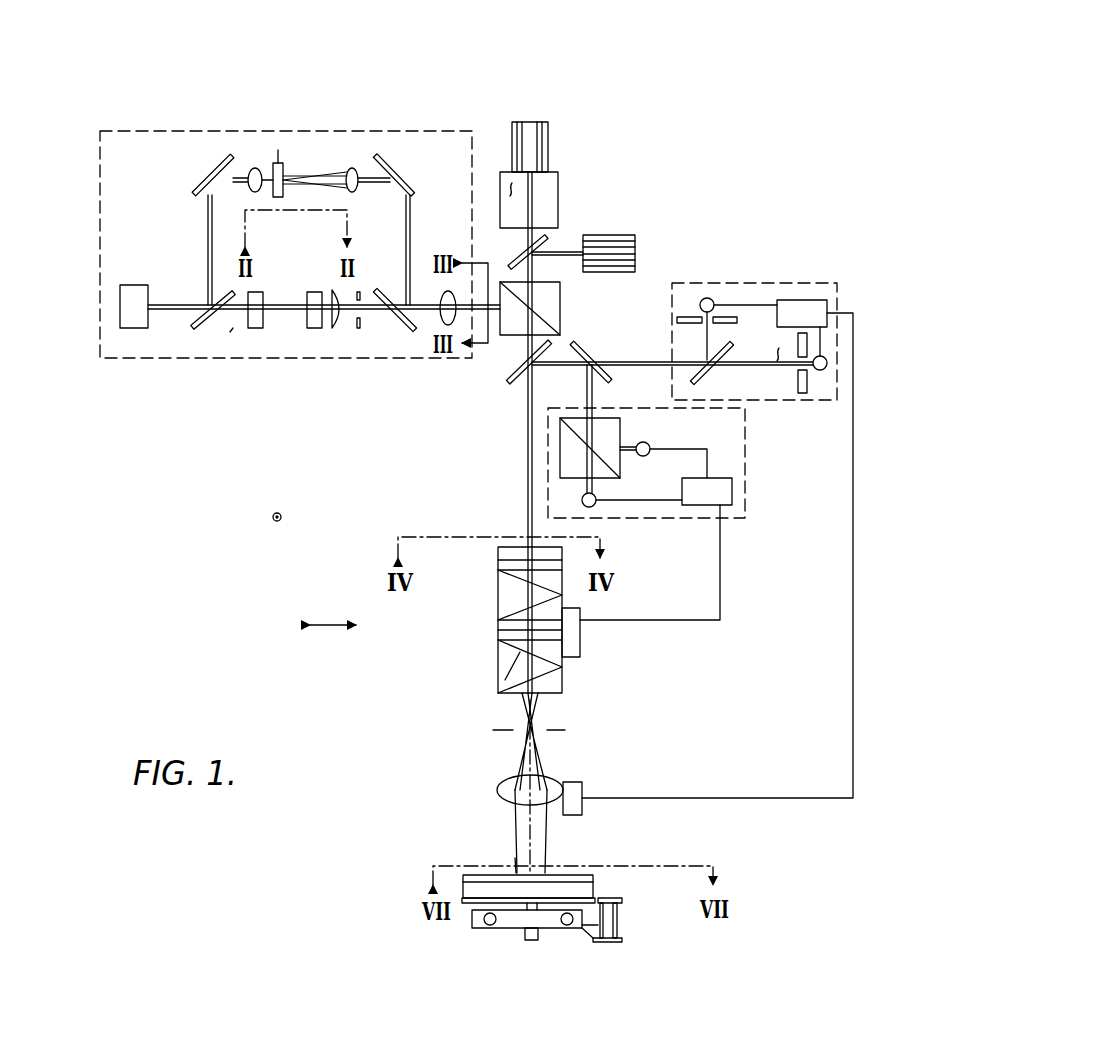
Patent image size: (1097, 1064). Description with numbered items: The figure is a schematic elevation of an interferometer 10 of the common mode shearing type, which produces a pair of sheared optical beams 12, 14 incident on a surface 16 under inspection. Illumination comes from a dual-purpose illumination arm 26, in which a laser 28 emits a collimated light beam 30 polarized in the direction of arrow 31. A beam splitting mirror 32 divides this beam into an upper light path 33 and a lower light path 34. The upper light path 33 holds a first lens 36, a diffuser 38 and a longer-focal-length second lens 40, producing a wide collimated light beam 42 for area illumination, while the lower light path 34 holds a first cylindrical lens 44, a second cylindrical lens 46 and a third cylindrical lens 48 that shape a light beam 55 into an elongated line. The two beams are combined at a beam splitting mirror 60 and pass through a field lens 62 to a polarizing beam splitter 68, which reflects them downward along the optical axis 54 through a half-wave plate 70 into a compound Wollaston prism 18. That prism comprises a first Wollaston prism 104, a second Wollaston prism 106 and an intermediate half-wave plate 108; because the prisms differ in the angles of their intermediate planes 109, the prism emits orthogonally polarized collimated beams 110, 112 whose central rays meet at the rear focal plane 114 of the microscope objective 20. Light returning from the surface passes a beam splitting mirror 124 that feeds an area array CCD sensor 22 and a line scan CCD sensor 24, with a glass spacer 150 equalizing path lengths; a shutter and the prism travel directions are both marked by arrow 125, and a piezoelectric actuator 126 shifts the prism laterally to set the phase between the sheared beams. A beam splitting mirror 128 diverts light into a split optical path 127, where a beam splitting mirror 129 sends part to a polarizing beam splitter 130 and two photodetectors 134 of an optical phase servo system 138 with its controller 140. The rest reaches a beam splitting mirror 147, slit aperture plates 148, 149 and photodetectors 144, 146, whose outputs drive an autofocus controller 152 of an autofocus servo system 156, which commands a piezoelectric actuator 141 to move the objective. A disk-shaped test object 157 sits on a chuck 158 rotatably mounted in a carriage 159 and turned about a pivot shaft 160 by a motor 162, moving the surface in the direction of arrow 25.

The interferometer 10 is at (630, 686).
The sheared optical beam 12 is at (547, 840).
The sheared optical beam 14 is at (515, 858).
The surface 16 is at (585, 876).
The compound Wollaston prism 18 is at (435, 580).
The microscope objective 20 is at (560, 780).
The area array CCD sensor 22 is at (592, 235).
The line scan CCD sensor 24 is at (548, 152).
The arrow 25 is at (357, 968).
The dual-purpose illumination arm 26 is at (270, 360).
The laser 28 is at (130, 328).
The light beam 30 is at (198, 332).
The arrow 31 is at (283, 520).
The beam splitting mirror 32 is at (232, 334).
The upper light path 33 is at (323, 136).
The lower light path 34 is at (288, 284).
The first lens 36 is at (250, 168).
The diffuser 38 is at (272, 162).
The second lens 40 is at (352, 166).
The light beam 42 is at (372, 150).
The first cylindrical lens 44 is at (255, 330).
The second cylindrical lens 46 is at (315, 330).
The third cylindrical lens 48 is at (337, 330).
The optical axis 54 is at (528, 490).
The light beam 55 is at (360, 330).
The beam splitting mirror 60 is at (392, 286).
The field lens 62 is at (445, 326).
The polarizing beam splitter 68 is at (561, 297).
The half-wave plate 70 is at (498, 558).
The first Wollaston prism 104 is at (498, 590).
The second Wollaston prism 106 is at (498, 668).
The intermediate half-wave plate 108 is at (498, 630).
The intermediate planes 109 is at (520, 652).
The collimated beam 110 is at (543, 764).
The collimated beam 112 is at (520, 758).
The rear focal plane 114 is at (556, 729).
The beam splitting mirror 124 is at (536, 262).
The arrow 125 is at (358, 345).
The piezoelectric actuator 126 is at (582, 640).
The split optical path 127 is at (670, 367).
The beam splitting mirror 128 is at (512, 380).
The beam splitting mirror 129 is at (591, 357).
The polarizing beam splitter 130 is at (560, 440).
The photodetector 134 is at (650, 446).
The optical phase servo system 138 is at (745, 430).
The controller 140 is at (732, 482).
The piezoelectric actuator 141 is at (584, 812).
The photodetector 144 is at (708, 298).
The photodetector 146 is at (828, 363).
The beam splitting mirror 147 is at (694, 370).
The slit aperture plate 148 is at (684, 316).
The slit aperture plate 149 is at (808, 393).
The glass spacer 150 is at (508, 184).
The autofocus controller 152 is at (830, 300).
The autofocus servo system 156 is at (765, 283).
The disk-shaped test object 157 is at (595, 878).
The chuck 158 is at (463, 892).
The carriage 159 is at (553, 930).
The pivot shaft 160 is at (530, 941).
The motor 162 is at (622, 918).